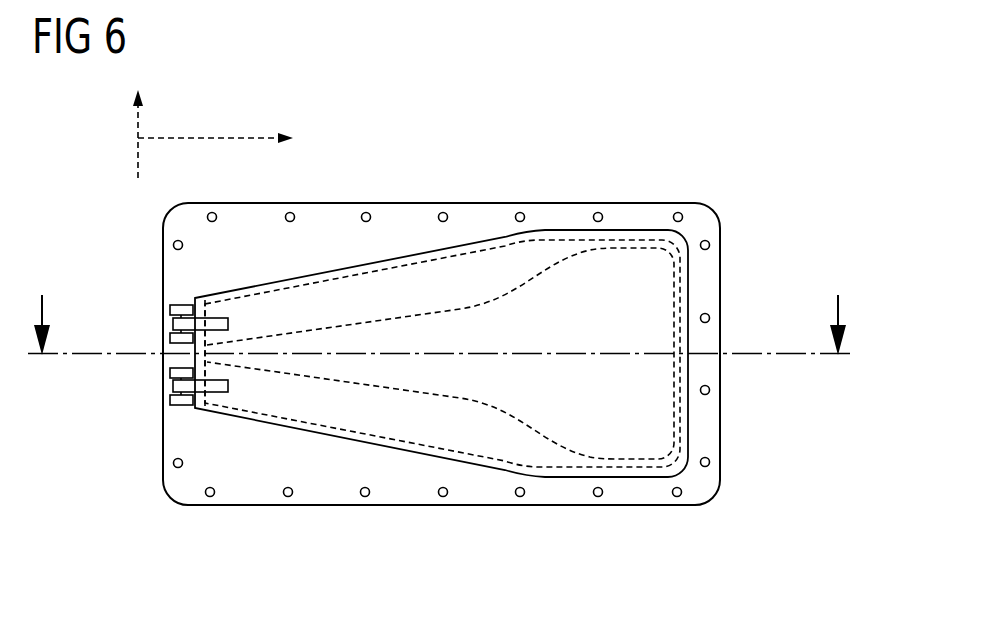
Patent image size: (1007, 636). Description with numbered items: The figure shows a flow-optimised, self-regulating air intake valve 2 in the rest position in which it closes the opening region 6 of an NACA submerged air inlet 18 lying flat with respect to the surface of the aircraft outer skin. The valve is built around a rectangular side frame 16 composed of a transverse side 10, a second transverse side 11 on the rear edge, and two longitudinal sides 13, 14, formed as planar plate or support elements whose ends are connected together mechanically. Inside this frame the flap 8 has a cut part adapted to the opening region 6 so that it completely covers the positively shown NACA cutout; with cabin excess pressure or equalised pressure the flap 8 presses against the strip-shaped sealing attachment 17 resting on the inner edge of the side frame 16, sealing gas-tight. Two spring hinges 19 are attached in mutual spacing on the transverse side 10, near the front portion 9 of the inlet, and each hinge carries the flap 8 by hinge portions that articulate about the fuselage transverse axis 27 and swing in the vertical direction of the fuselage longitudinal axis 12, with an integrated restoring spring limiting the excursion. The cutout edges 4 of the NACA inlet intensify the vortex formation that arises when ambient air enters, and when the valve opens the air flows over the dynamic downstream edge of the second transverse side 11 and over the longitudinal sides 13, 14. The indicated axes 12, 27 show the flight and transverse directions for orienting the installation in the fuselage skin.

The air intake valve 2 is at (843, 63).
The cutout edges 4 is at (501, 300).
The opening region 6 is at (652, 394).
The flap 8 is at (283, 303).
The front portion 9 is at (197, 351).
The transverse side 10 is at (180, 268).
The second transverse side 11 is at (708, 282).
The fuselage longitudinal axis 12 is at (204, 138).
The longitudinal side 13 is at (475, 218).
The longitudinal side 14 is at (397, 493).
The side frame 16 is at (637, 500).
The sealing attachment 17 is at (340, 278).
The NACA submerged air inlet 18 is at (808, 162).
The spring hinge 19 is at (160, 315).
The fuselage transverse axis 27 is at (137, 160).